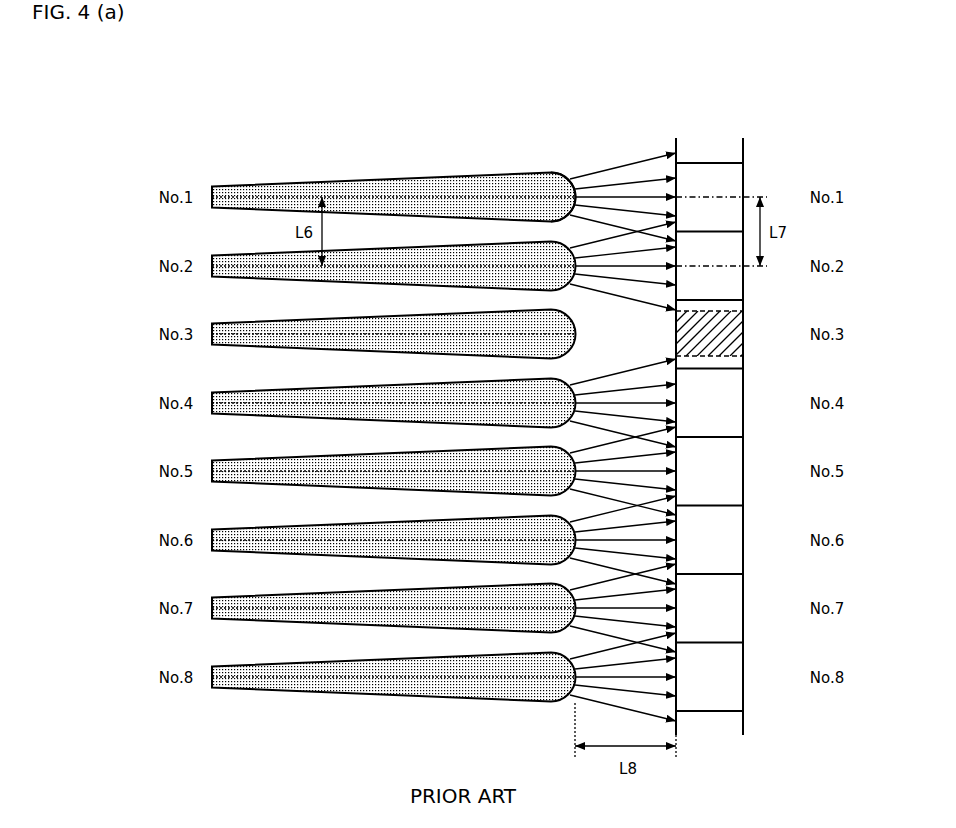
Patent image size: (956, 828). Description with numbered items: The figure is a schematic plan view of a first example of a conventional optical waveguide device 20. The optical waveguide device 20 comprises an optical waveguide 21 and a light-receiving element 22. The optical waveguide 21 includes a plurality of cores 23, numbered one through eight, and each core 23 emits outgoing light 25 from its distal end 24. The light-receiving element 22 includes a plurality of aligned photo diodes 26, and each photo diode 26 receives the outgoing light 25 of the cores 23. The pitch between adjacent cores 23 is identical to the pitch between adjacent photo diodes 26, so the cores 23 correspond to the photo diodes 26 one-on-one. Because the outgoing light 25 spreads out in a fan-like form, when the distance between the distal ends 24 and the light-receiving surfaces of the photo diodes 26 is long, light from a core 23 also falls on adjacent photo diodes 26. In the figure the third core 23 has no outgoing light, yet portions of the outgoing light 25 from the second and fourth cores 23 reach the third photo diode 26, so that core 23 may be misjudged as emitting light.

The optical waveguide device 20 is at (629, 100).
The optical waveguide 21 is at (429, 718).
The light-receiving element 22 is at (709, 739).
The core 23 is at (386, 182).
The distal end 24 is at (560, 197).
The outgoing light 25 is at (613, 167).
The photo diode 26 is at (710, 161).